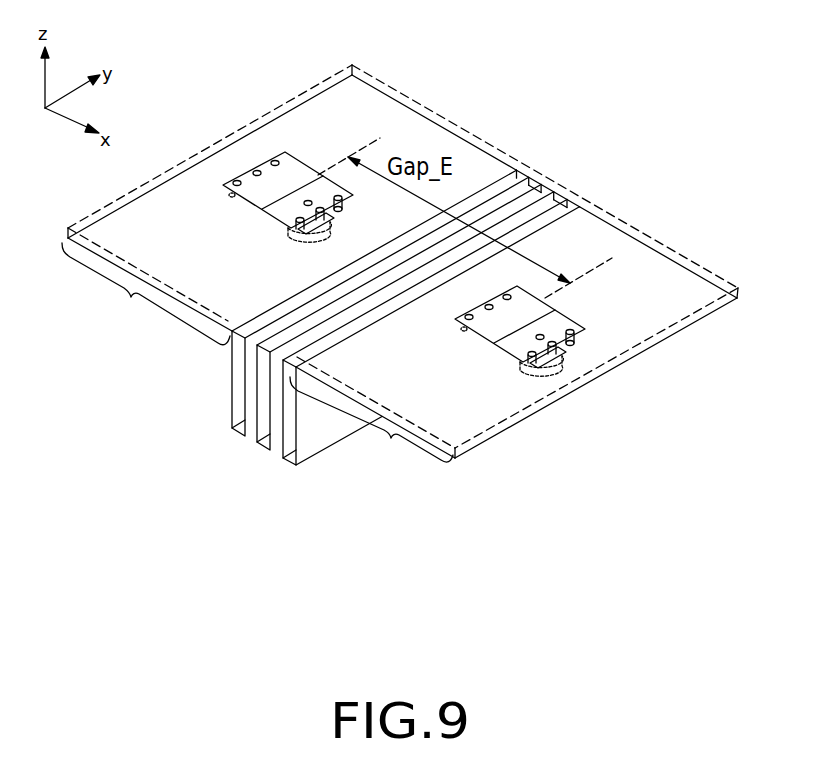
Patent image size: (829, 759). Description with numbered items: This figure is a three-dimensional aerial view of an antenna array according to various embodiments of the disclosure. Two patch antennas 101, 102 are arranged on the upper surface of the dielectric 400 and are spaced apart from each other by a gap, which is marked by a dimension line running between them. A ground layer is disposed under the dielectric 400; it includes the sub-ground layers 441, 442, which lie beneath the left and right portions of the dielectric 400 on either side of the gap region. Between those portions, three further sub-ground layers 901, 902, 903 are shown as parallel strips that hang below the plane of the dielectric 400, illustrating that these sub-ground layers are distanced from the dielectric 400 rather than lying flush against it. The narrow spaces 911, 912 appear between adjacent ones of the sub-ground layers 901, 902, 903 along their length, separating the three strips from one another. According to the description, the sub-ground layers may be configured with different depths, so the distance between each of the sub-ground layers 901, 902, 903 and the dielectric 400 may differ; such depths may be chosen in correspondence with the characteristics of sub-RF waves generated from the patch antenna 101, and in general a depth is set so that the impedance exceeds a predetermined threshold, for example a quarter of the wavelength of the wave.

The patch antenna 101 is at (247, 175).
The patch antenna 102 is at (577, 318).
The dielectric 400 is at (692, 262).
The sub-ground layer 441 is at (289, 210).
The second sub-ground layer 442 is at (513, 343).
The sub-ground layer 901 is at (238, 435).
The sub-ground layer 902 is at (266, 452).
The sub-ground layer 903 is at (288, 467).
The first slit 911 is at (538, 178).
The second slit 912 is at (570, 193).